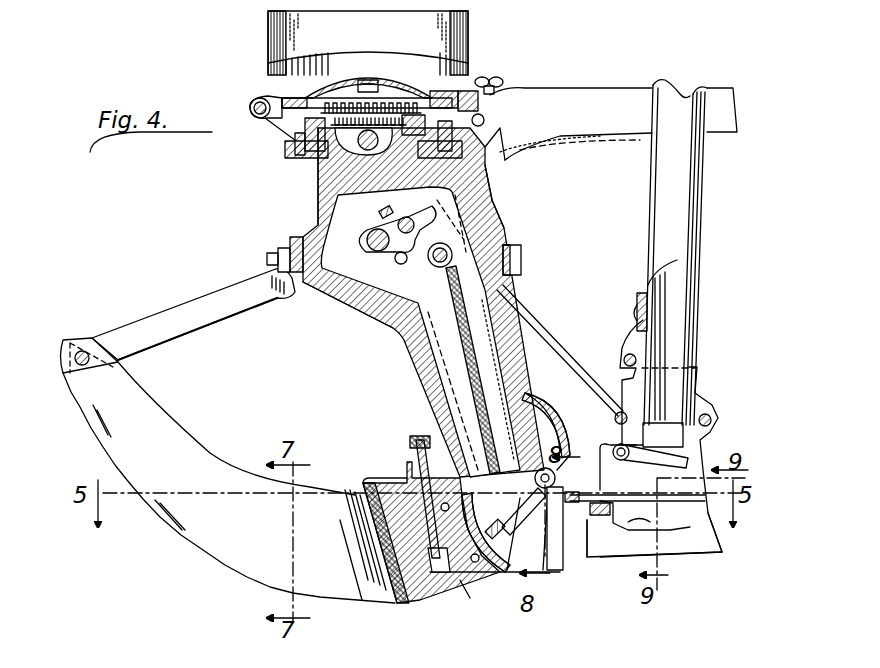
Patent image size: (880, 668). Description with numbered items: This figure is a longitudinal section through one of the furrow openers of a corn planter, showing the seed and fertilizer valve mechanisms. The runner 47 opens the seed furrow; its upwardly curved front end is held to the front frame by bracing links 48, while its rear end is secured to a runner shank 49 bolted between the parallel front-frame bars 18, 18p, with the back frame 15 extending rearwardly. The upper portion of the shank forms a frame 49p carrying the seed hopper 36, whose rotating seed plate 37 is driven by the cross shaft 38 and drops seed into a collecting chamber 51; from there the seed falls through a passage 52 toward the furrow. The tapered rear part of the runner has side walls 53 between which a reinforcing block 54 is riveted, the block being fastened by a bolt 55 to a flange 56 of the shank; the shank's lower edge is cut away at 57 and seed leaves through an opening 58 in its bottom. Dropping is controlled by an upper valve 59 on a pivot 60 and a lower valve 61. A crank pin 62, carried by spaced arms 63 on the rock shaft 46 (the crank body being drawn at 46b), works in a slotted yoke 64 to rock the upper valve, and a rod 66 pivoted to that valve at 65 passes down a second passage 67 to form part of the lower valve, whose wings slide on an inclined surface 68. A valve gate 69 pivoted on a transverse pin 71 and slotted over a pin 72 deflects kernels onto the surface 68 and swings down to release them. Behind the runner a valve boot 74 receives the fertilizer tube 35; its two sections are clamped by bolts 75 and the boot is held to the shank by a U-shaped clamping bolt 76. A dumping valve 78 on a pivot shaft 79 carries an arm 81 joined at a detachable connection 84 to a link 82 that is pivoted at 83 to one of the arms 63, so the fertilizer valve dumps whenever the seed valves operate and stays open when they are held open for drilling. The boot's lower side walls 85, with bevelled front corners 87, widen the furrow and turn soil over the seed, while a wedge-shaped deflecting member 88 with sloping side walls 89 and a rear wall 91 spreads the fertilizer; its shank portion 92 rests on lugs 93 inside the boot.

The back frame 15 is at (735, 96).
The parallel bar of front frame 18 is at (292, 236).
The parallel bar of front frame 18p is at (522, 250).
The spout or tube 35 is at (670, 266).
The seed hopper 36 is at (275, 44).
The rotating seed plate 37 is at (472, 76).
The cross shaft 38 is at (296, 162).
The rock shaft 46 is at (372, 242).
The crank body 46b is at (397, 229).
The runner 47 is at (222, 570).
The bracing links 48 is at (200, 288).
The runner shank 49 is at (416, 378).
The frame portion of runner shank 49p is at (318, 190).
The seed collecting chamber 51 is at (478, 150).
The passage 52 is at (512, 283).
The side walls 53 is at (392, 580).
The tapered reinforcing block 54 is at (462, 572).
The bolt 55 is at (385, 520).
The flange 56 is at (368, 477).
The cut-away lower edge 57 is at (440, 575).
The opening or passageway 58 is at (507, 535).
The upper valve 59 is at (488, 196).
The pivot 60 is at (496, 222).
The lower valve 61 is at (545, 408).
The crank pin 62 is at (406, 218).
The spaced arms 63 is at (378, 212).
The slotted yoke 64 is at (396, 262).
The pivotal connection 65 is at (428, 262).
The rod 66 is at (370, 318).
The second passage 67 is at (425, 322).
The inclined surface 68 is at (479, 599).
The valve gate 69 is at (556, 480).
The transverse pivot pin 71 is at (535, 470).
The pin 72 is at (492, 565).
The valve boot 74 is at (702, 456).
The bolts 75 is at (636, 360).
The U-shaped clamping bolt 76 is at (418, 455).
The dumping valve 78 is at (663, 436).
The pivot shaft 79 is at (630, 458).
The arm 81 is at (614, 418).
The link 82 is at (540, 322).
The pivotal connection 83 is at (515, 160).
The pivotal connection 84 is at (643, 382).
The side walls or wings 85 is at (716, 554).
The bevel 87 is at (588, 560).
The deflecting member 88 is at (662, 556).
The laterally sloping side walls 89 is at (700, 520).
The downwardly sloping rear wall 91 is at (690, 530).
The shank portion 92 is at (575, 505).
The companion lugs 93 is at (600, 518).